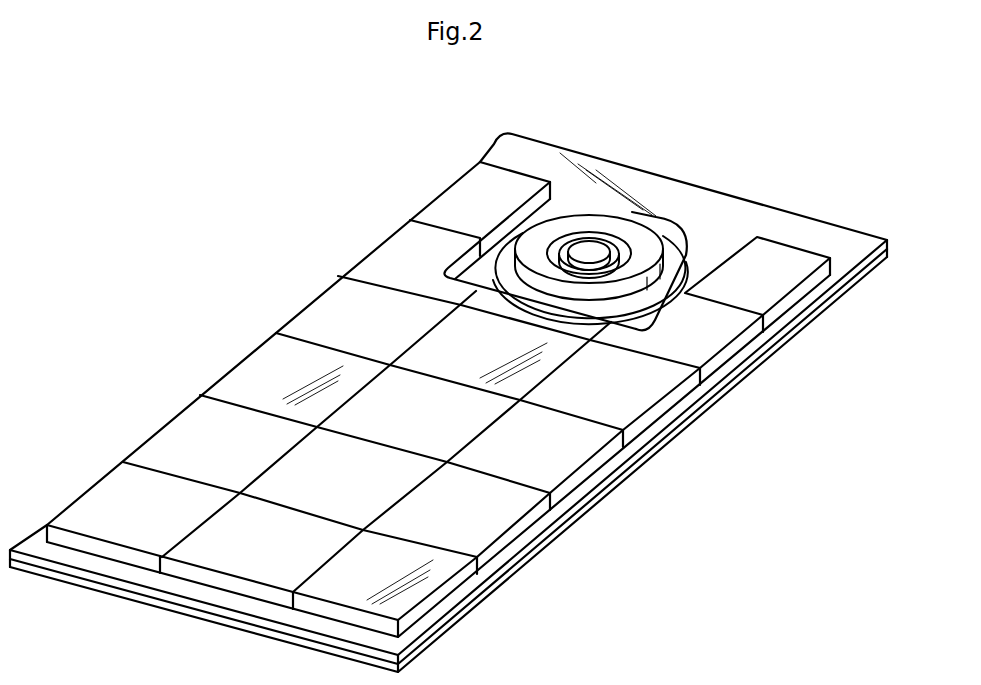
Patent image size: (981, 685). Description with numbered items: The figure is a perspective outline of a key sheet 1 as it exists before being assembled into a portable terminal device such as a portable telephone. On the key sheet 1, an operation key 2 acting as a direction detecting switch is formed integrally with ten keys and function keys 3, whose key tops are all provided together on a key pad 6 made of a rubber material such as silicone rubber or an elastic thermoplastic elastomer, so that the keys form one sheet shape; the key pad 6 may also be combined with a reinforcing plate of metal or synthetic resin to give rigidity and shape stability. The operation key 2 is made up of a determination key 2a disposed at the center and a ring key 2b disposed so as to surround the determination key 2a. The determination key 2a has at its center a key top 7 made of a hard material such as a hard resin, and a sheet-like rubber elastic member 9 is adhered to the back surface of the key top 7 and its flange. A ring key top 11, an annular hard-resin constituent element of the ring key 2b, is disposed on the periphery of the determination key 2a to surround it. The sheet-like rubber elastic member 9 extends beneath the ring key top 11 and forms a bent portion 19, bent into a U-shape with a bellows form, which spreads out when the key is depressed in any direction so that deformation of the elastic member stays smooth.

The key sheet 1 is at (716, 166).
The operation key 2 is at (598, 242).
The determination key 2a is at (585, 252).
The ring key 2b is at (638, 230).
The ten keys and function keys 3 is at (397, 243).
The key pad 6 is at (838, 248).
The sheet-like rubber elastic member 9 is at (448, 464).
The key top 7 is at (575, 251).
The ring key top 11 is at (653, 243).
The bent portion 19 is at (690, 246).